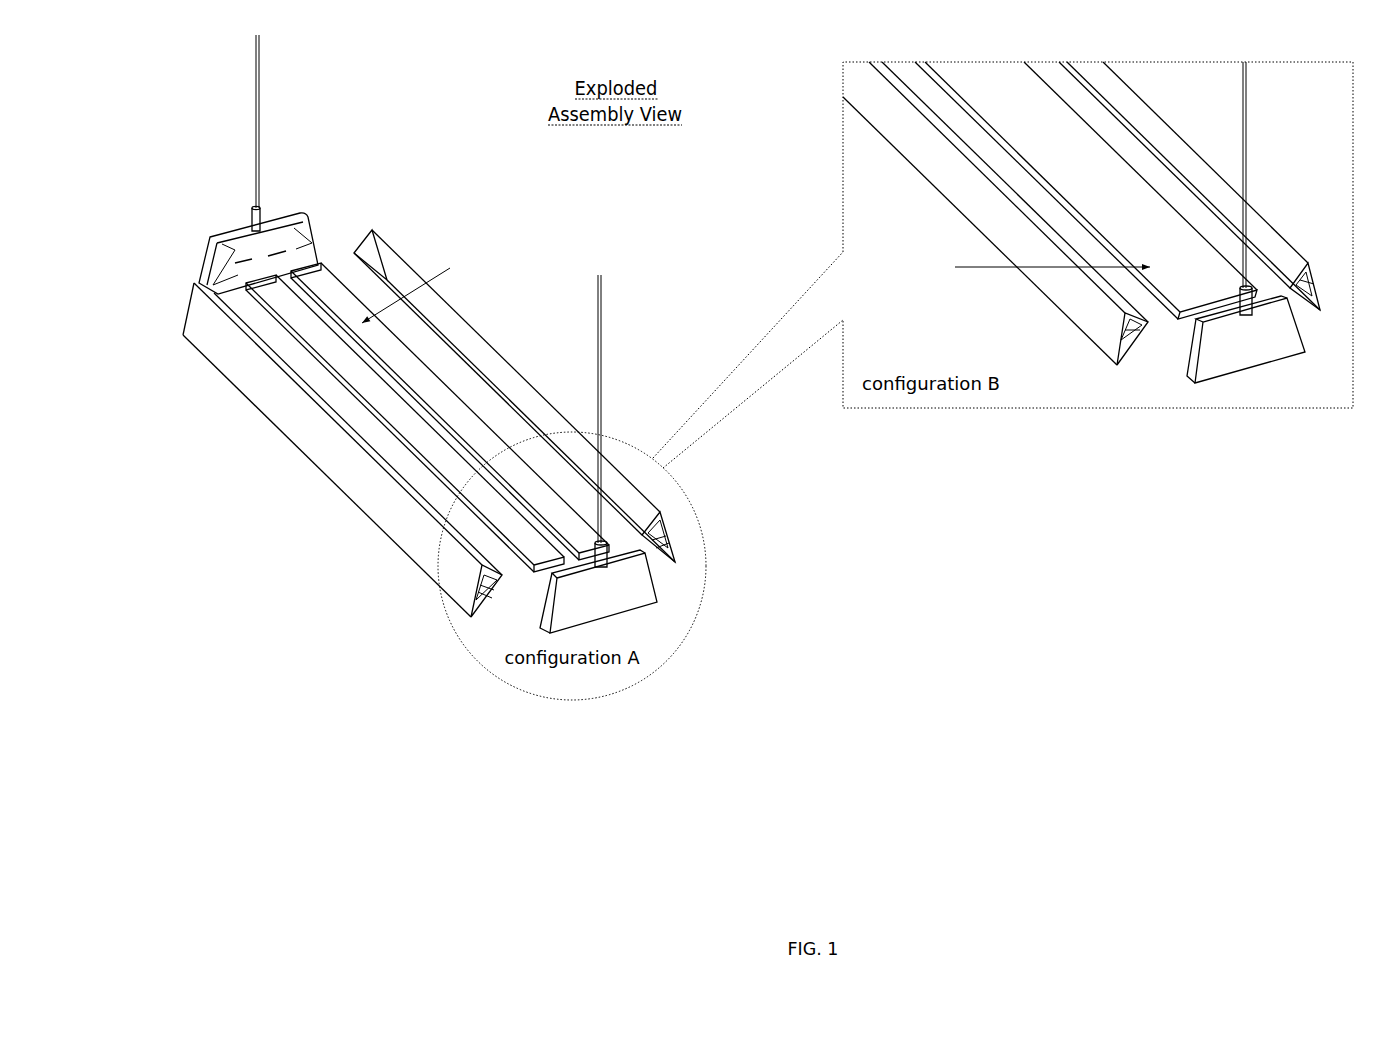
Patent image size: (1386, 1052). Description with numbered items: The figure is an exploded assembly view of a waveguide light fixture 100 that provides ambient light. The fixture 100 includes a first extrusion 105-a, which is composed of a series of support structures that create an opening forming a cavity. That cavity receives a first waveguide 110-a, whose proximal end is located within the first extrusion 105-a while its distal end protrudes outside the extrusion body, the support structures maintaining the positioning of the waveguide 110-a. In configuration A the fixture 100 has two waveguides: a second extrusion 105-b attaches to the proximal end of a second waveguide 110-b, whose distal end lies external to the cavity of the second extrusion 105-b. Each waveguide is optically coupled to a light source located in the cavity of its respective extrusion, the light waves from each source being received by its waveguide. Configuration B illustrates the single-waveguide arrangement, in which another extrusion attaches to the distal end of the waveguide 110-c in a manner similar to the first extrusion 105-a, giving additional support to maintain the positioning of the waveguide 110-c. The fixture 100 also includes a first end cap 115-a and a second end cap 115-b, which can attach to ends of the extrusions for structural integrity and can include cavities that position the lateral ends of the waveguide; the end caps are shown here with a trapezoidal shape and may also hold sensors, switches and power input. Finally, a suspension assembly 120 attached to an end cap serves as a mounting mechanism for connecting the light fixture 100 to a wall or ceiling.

The waveguide light fixture 100 is at (1012, 921).
The first extrusion 105-a is at (184, 334).
The second extrusion 105-b is at (375, 257).
The first waveguide 110-a is at (620, 274).
The second waveguide 110-b is at (322, 262).
The waveguide 110-c is at (1172, 320).
The first end cap 115-a is at (273, 232).
The second end cap 115-b is at (660, 592).
The suspension assembly 120 is at (261, 213).